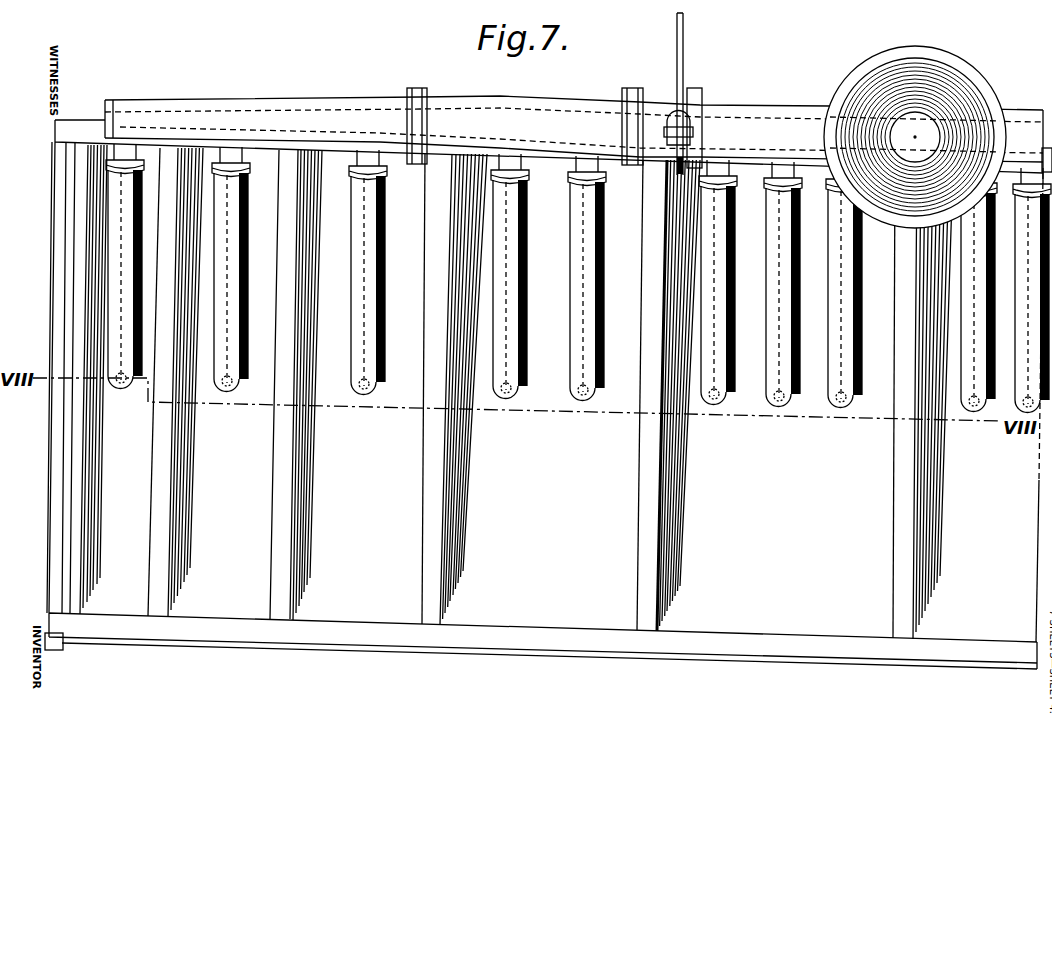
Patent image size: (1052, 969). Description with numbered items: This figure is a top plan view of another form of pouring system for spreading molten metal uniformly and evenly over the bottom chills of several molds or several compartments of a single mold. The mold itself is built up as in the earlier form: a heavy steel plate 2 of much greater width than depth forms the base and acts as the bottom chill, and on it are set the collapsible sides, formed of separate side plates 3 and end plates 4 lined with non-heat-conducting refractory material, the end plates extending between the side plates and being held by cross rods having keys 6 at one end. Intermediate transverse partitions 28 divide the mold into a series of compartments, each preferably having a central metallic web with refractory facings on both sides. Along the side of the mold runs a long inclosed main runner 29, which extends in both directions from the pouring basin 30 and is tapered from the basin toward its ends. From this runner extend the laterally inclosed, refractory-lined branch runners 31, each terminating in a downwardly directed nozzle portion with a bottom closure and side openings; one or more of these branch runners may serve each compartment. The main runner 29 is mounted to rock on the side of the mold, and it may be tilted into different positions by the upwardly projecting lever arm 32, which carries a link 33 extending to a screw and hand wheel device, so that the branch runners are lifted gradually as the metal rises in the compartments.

The heavy steel plate 2 is at (553, 381).
The side plates 3 is at (541, 641).
The end plates 4 is at (72, 460).
The keys 6 is at (63, 450).
The intermediate transverse partitions 28 is at (280, 531).
The main runner 29 is at (343, 113).
The pouring basin 30 is at (950, 82).
The branch runners 31 is at (240, 310).
The lever arm 32 is at (689, 112).
The link 33 is at (684, 64).